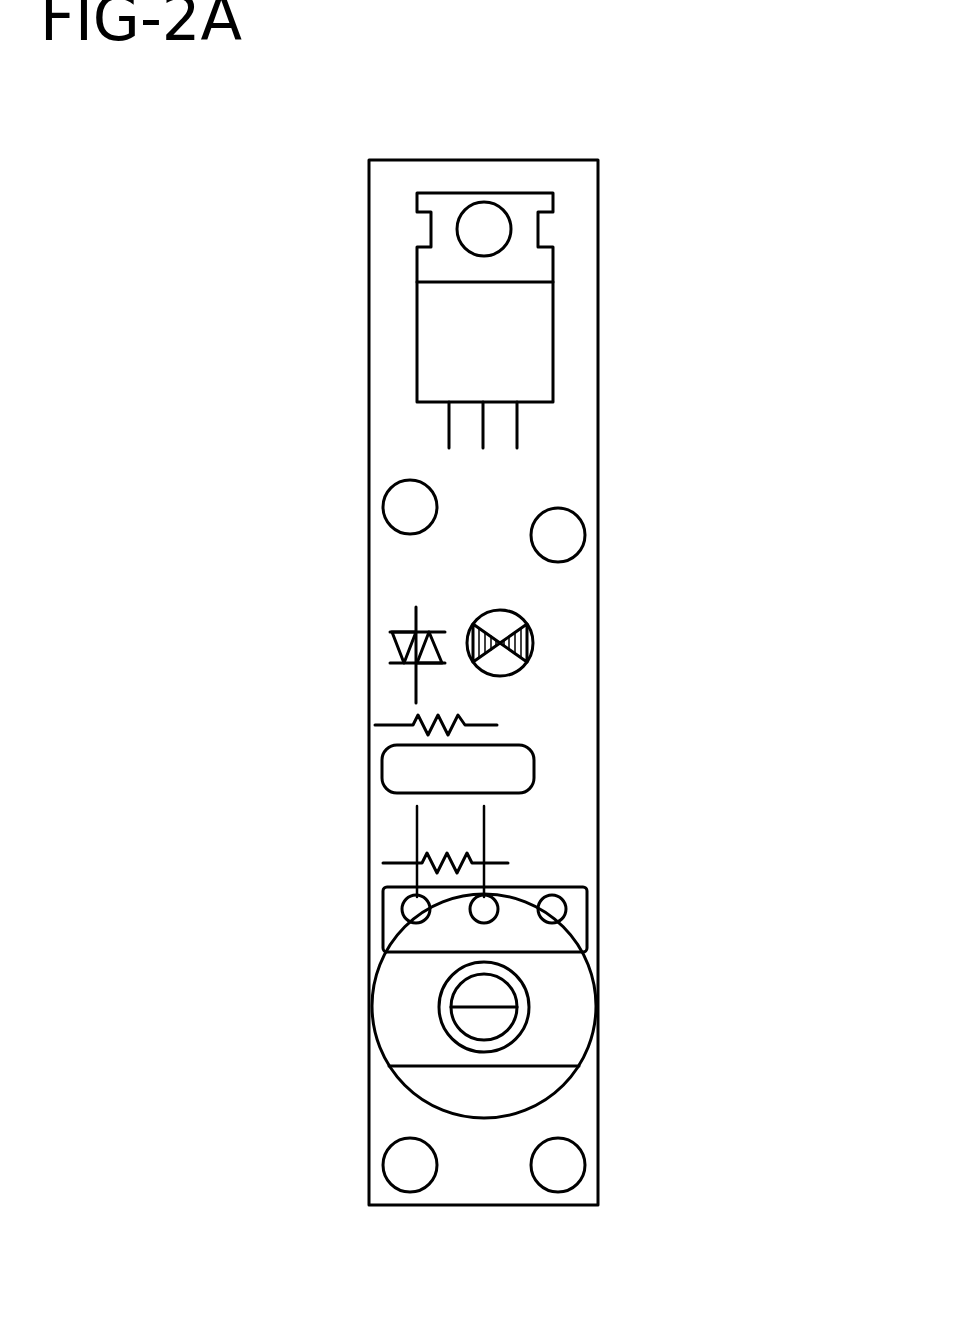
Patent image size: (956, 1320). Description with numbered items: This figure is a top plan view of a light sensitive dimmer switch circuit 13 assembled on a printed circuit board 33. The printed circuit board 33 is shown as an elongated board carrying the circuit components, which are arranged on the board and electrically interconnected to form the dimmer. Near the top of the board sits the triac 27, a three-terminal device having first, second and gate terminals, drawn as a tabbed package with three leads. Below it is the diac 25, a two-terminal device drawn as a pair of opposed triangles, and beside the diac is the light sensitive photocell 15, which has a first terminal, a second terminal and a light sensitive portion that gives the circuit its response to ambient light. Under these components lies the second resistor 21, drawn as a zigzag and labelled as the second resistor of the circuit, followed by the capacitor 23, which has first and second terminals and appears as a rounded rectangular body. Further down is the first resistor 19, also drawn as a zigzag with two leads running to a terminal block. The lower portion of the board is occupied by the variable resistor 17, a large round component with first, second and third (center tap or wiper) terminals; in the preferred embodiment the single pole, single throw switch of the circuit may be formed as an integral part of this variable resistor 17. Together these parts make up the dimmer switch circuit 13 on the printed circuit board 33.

The light sensitive dimmer switch circuit 13 is at (152, 1082).
The printed circuit board 33 is at (598, 268).
The triac 27 is at (553, 365).
The diac 25 is at (415, 620).
The light sensitive photocell 15 is at (528, 655).
The second resistor 21 is at (497, 725).
The capacitor 23 is at (382, 770).
The first resistor 19 is at (508, 863).
The variable resistor 17 is at (587, 1057).